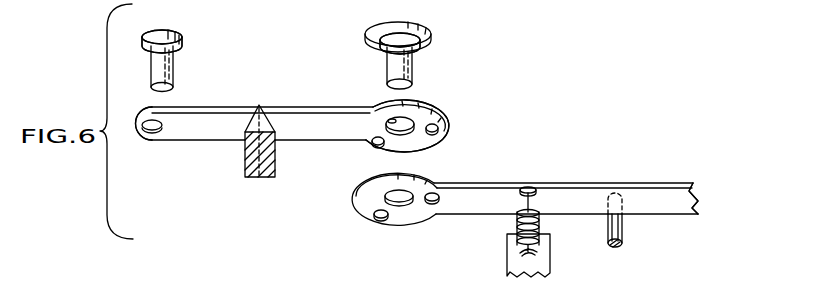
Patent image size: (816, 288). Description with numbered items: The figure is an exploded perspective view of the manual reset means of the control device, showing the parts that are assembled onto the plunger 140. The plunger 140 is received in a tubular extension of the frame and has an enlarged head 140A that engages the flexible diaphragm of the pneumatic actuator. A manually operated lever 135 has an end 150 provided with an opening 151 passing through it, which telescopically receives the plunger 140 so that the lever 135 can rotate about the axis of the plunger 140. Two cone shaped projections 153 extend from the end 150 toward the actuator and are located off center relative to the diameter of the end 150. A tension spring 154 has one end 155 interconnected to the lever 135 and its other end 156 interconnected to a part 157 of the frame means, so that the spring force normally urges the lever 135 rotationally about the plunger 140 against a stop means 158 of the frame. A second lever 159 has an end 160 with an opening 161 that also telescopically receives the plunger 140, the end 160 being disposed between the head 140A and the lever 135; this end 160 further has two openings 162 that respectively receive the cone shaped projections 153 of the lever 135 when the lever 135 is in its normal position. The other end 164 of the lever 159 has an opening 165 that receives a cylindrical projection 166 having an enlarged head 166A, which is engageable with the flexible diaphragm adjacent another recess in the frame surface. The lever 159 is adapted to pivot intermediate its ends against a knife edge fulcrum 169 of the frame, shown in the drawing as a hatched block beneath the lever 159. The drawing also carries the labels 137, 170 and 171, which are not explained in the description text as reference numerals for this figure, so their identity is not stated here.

The lever 135 is at (572, 196).
The member 137 is at (154, 283).
The plunger 140 is at (410, 68).
The enlarged head 140A is at (430, 30).
The end 150 is at (428, 172).
The opening 151 is at (398, 203).
The cone shaped projections 153 is at (432, 192).
The tension spring 154 is at (540, 226).
The end 155 is at (520, 216).
The other end 156 is at (549, 263).
The part 157 is at (522, 264).
The stop means 158 is at (623, 230).
The lever 159 is at (292, 122).
The end 160 is at (422, 113).
The opening 161 is at (390, 124).
The openings 162 is at (443, 135).
The other end 164 is at (167, 115).
The opening 165 is at (161, 133).
The cylindrical projection 166 is at (172, 68).
The enlarged head 166A is at (170, 33).
The knife edge fulcrum 169 is at (270, 150).
The washer flange 170 is at (388, 43).
The arm end 171 is at (678, 206).